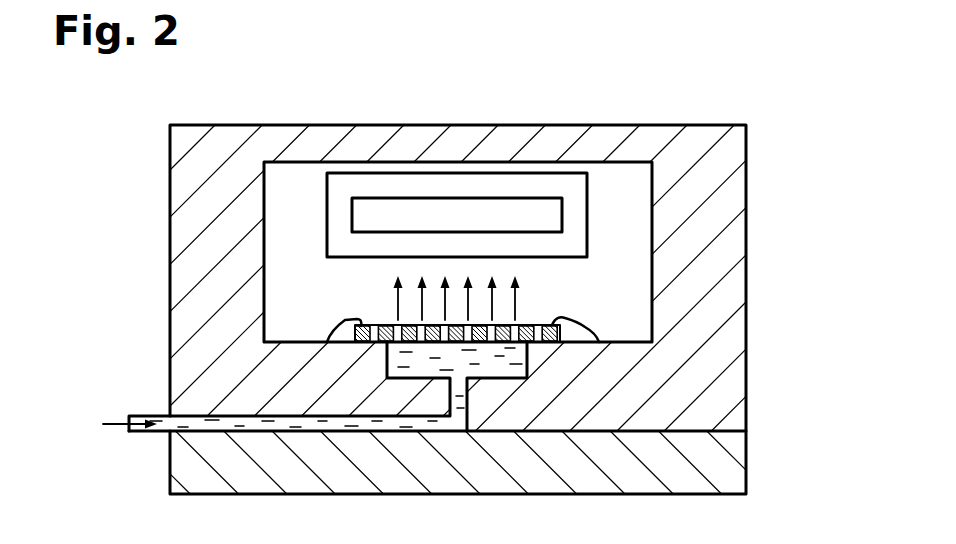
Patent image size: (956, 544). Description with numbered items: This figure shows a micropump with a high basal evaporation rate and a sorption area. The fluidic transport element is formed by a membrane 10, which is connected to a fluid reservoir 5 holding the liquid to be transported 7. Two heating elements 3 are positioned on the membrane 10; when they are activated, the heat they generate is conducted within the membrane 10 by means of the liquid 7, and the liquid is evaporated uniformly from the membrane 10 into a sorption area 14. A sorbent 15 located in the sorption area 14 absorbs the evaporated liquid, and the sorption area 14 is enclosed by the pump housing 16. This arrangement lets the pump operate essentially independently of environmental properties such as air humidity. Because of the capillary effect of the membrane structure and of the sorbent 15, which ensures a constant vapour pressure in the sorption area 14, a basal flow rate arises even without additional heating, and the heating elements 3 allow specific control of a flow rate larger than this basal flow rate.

The heating elements 3 is at (337, 317).
The fluid reservoir 5 is at (197, 424).
The liquid to be transported 7 is at (172, 416).
The membrane 10 is at (558, 341).
The sorption area 14 is at (600, 178).
The sorbent 15 is at (444, 182).
The pump housing 16 is at (735, 194).